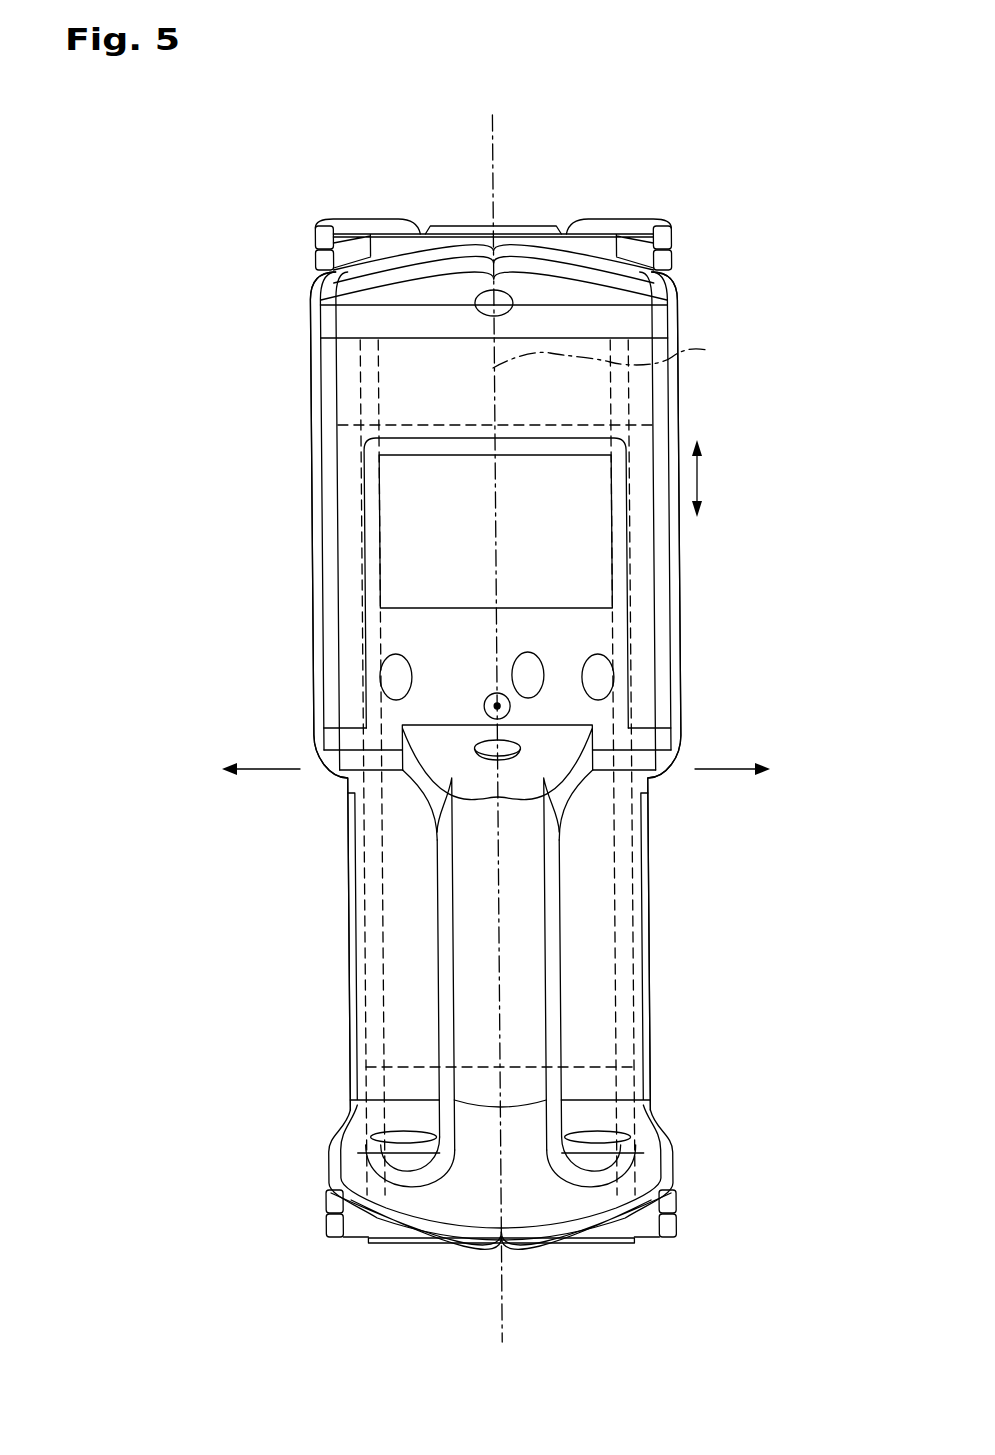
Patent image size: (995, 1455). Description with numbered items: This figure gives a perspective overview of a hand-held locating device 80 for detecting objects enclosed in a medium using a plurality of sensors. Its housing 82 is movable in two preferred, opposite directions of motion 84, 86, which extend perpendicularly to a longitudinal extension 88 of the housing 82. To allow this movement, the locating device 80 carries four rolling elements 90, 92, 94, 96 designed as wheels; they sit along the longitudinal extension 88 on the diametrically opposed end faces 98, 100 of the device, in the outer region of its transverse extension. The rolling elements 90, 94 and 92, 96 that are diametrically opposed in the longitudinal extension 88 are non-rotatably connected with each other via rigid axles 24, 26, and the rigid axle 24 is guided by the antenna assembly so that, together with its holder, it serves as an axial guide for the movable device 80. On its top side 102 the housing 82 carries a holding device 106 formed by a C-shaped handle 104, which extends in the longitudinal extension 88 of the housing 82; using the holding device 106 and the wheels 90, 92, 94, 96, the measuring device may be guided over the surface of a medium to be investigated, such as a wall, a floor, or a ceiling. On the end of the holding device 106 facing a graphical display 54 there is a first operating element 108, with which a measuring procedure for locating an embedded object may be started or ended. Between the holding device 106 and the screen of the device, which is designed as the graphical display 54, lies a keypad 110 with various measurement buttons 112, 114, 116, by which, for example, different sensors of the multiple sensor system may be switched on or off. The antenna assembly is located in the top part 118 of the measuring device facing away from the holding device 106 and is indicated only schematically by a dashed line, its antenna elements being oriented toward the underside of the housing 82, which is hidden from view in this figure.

The rigid axle 24 is at (368, 943).
The rigid axle 26 is at (625, 943).
The graphical display 54 is at (603, 573).
The hand-held locating device 80 is at (283, 250).
The housing 82 is at (697, 252).
The direction of motion 84 is at (260, 770).
The direction of motion 86 is at (735, 770).
The longitudinal extension 88 is at (703, 472).
The rolling element 90 is at (340, 232).
The rolling element 92 is at (650, 230).
The rolling element 94 is at (337, 1243).
The rolling element 96 is at (665, 1243).
The end face 98 is at (505, 232).
The end face 100 is at (550, 1245).
The top side 102 is at (590, 885).
The C-shaped handle 104 is at (528, 1082).
The holding device 106 is at (430, 892).
The first operating element 108 is at (485, 750).
The keypad 110 is at (373, 640).
The measurement button 112 is at (390, 678).
The measurement button 114 is at (530, 665).
The measurement button 116 is at (603, 675).
The top part 118 is at (627, 348).